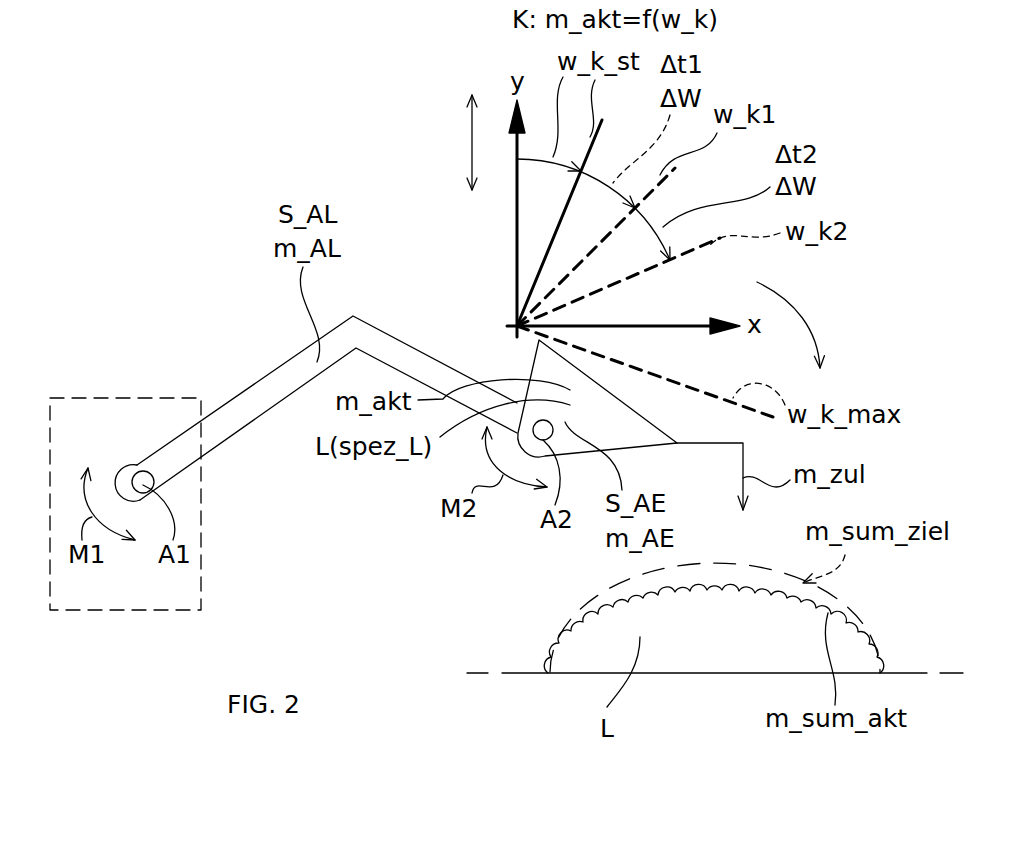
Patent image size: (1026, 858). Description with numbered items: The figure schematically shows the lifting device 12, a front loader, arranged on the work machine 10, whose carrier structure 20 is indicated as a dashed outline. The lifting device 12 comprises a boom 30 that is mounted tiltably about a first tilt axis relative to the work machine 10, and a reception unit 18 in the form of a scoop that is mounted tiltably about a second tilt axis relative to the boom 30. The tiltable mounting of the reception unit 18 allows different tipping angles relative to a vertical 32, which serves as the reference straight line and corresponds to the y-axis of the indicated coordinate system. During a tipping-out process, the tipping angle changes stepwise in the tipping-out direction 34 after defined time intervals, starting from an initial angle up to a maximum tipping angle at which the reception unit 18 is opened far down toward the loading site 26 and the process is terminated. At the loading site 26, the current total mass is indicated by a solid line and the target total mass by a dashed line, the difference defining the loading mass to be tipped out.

The work machine 10 is at (117, 612).
The carrier structure 20 is at (137, 430).
The boom 30 is at (252, 407).
The lifting device 12 is at (392, 327).
The reception unit 18 is at (518, 380).
The loading site 26 is at (720, 680).
The vertical 32 is at (472, 147).
The tipping-out direction 34 is at (810, 325).